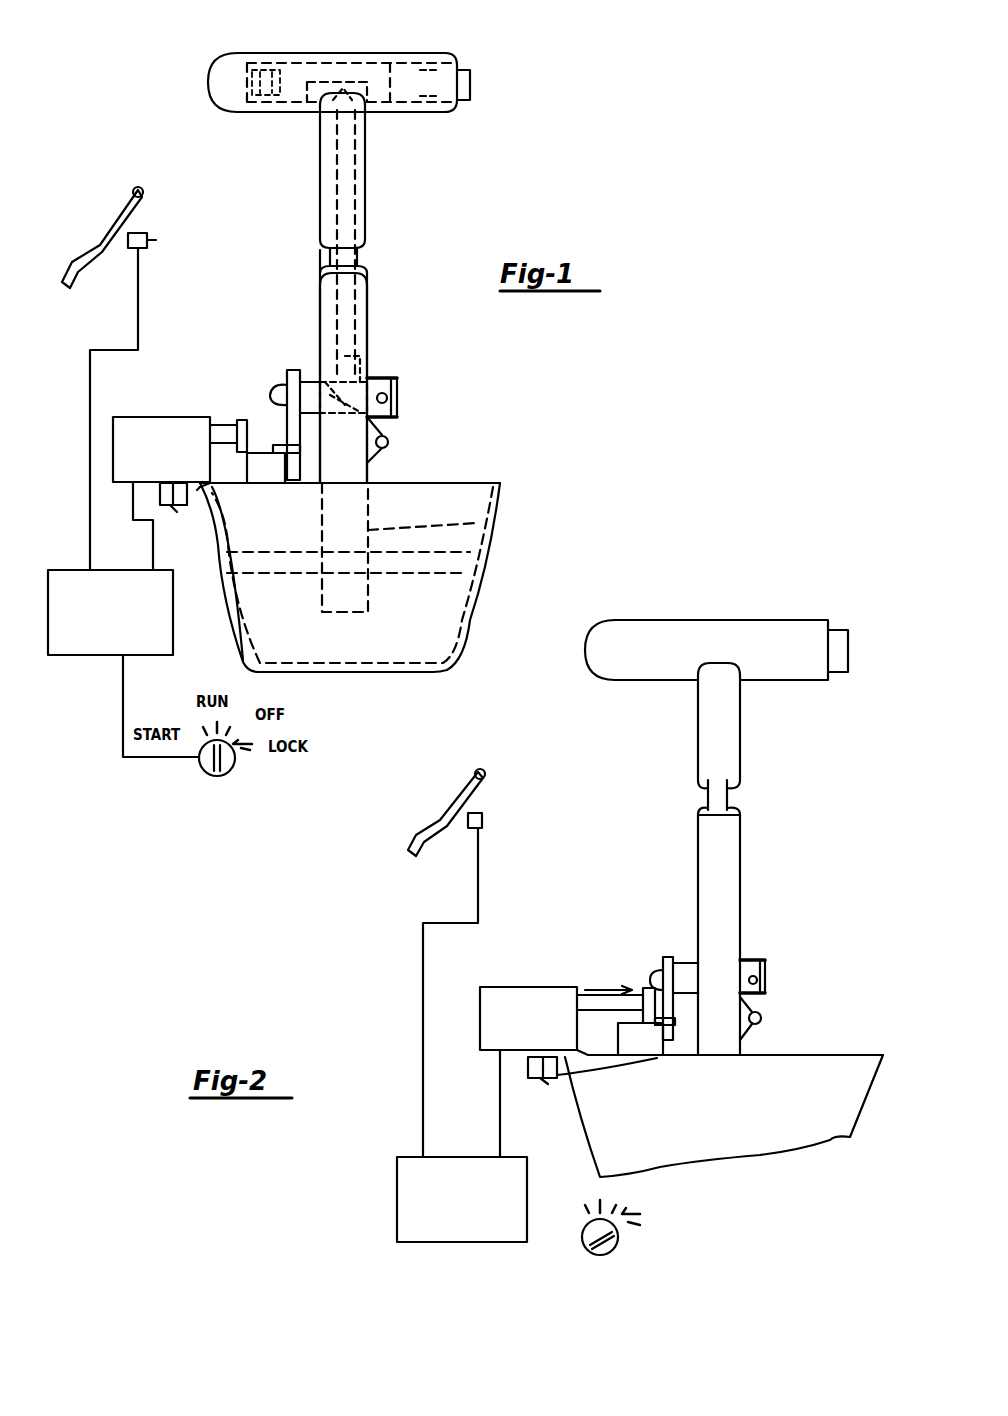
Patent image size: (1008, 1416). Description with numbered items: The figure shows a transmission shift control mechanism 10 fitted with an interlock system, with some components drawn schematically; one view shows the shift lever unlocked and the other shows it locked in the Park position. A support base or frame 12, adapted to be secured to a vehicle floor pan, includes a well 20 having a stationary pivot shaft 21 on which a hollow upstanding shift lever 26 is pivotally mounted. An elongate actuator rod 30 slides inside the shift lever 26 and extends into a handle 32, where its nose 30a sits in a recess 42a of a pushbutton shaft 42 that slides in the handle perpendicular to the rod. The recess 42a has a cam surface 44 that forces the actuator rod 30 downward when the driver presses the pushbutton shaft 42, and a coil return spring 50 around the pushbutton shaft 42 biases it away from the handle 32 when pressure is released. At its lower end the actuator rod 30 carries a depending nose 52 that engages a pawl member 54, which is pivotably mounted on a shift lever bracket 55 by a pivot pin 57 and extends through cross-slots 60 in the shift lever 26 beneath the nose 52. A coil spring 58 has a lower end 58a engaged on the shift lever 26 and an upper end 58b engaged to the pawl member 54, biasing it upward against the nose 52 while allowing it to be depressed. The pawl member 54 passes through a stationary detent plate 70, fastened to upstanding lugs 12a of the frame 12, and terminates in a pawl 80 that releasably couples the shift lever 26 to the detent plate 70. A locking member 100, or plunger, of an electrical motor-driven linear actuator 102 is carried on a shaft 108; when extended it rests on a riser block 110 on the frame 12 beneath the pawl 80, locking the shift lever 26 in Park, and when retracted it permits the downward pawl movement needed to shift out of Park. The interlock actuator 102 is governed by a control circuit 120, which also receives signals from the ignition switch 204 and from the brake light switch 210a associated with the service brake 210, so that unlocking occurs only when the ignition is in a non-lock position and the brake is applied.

In FIG. 1, the transmission shift control mechanism 10 is at (400, 341).
In FIG. 1, the support base or frame 12 is at (468, 502).
In FIG. 2, the support base or frame 12 is at (838, 1056).
In FIG. 1, the upstanding lugs 12a is at (280, 443).
In FIG. 2, the upstanding lugs 12a is at (630, 1075).
In FIG. 1, the well 20 is at (440, 626).
In FIG. 1, the stationary pivot shaft 21 is at (450, 571).
In FIG. 1, the shift lever 26 is at (367, 206).
In FIG. 2, the shift lever 26 is at (740, 880).
In FIG. 1, the actuator rod 30 is at (340, 263).
In FIG. 2, the actuator rod 30 is at (722, 798).
In FIG. 1, the nose 30a is at (333, 100).
In FIG. 1, the handle 32 is at (412, 58).
In FIG. 2, the handle 32 is at (695, 628).
In FIG. 1, the pushbutton shaft 42 is at (466, 100).
In FIG. 2, the pushbutton shaft 42 is at (838, 672).
In FIG. 1, the recess 42a is at (335, 80).
In FIG. 1, the cam surface 44 is at (362, 103).
In FIG. 1, the coil return spring 50 is at (250, 66).
In FIG. 1, the depending nose 52 is at (370, 358).
In FIG. 1, the pawl member 54 is at (397, 415).
In FIG. 2, the pawl member 54 is at (765, 993).
In FIG. 1, the shift lever bracket 55 is at (397, 380).
In FIG. 2, the shift lever bracket 55 is at (762, 960).
In FIG. 1, the pivot pin 57 is at (397, 398).
In FIG. 2, the pivot pin 57 is at (765, 982).
In FIG. 1, the coil spring 58 is at (388, 442).
In FIG. 2, the coil spring 58 is at (762, 1018).
In FIG. 1, the lower end 58a is at (377, 460).
In FIG. 1, the upper end 58b is at (375, 420).
In FIG. 1, the cross-slots 60 is at (325, 382).
In FIG. 1, the detent plate 70 is at (287, 372).
In FIG. 2, the detent plate 70 is at (668, 957).
In FIG. 1, the pawl 80 is at (270, 388).
In FIG. 2, the pawl 80 is at (654, 968).
In FIG. 1, the locking member 100 is at (232, 413).
In FIG. 2, the locking member 100 is at (638, 973).
In FIG. 1, the interlock actuator 102 is at (175, 458).
In FIG. 2, the interlock actuator 102 is at (540, 1027).
In FIG. 1, the shaft 108 is at (230, 432).
In FIG. 2, the shaft 108 is at (590, 1000).
In FIG. 1, the riser block 110 is at (262, 480).
In FIG. 2, the riser block 110 is at (568, 1078).
In FIG. 1, the control circuit 120 is at (143, 655).
In FIG. 2, the control circuit 120 is at (397, 1197).
In FIG. 2, the ignition switch 204 is at (615, 1248).
In FIG. 1, the service brake 210 is at (120, 228).
In FIG. 2, the service brake 210 is at (448, 800).
In FIG. 1, the brake light switch 210a is at (147, 242).
In FIG. 2, the brake light switch 210a is at (483, 822).